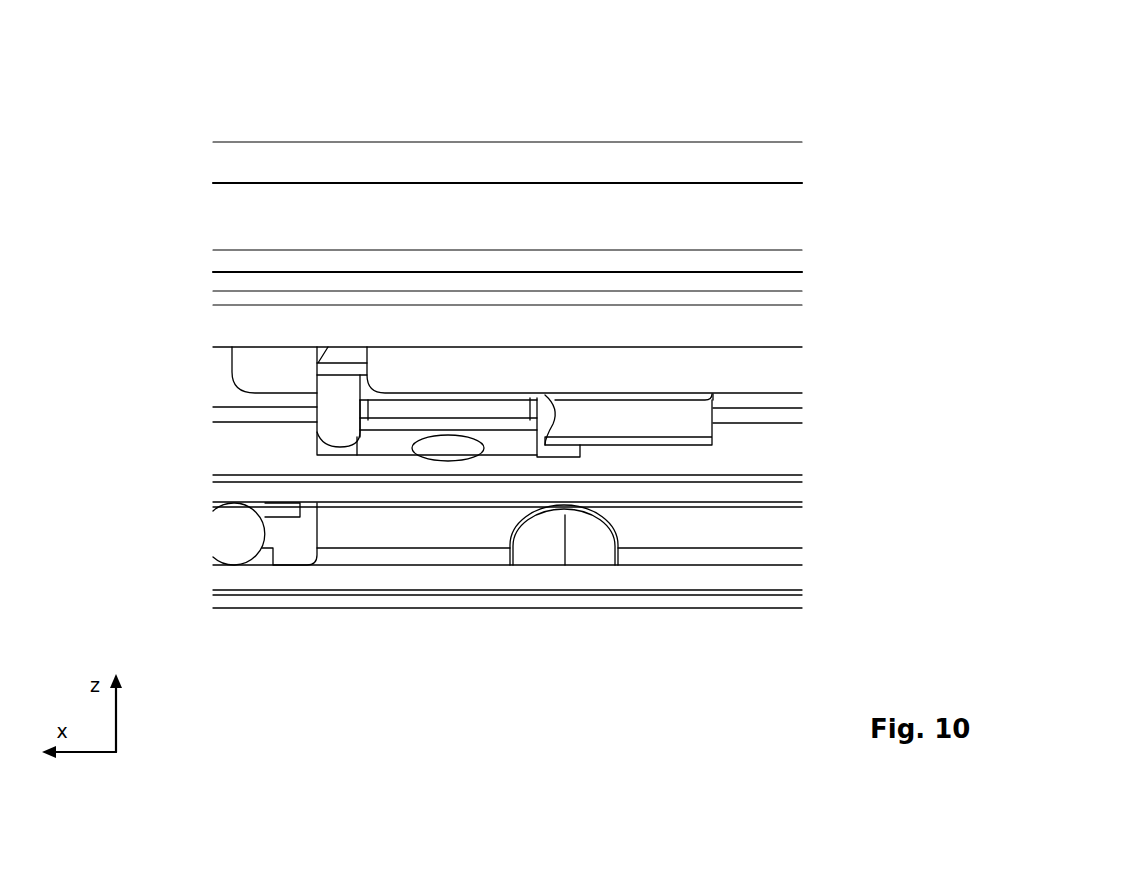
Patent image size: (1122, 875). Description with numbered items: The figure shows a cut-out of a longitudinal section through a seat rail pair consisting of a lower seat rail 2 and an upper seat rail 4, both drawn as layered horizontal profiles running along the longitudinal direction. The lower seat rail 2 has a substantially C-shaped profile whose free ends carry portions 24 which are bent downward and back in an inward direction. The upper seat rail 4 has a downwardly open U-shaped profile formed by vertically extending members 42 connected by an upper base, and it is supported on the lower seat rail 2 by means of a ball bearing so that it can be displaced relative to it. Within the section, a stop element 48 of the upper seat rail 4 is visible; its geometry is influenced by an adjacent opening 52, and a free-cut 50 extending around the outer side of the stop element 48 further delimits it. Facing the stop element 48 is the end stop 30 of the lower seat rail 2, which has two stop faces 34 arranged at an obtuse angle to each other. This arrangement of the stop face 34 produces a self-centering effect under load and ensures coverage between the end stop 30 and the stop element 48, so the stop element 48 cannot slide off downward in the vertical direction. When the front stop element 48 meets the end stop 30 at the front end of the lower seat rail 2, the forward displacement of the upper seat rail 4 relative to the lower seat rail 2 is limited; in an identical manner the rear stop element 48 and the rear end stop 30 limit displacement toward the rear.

The lower seat rail 2 is at (382, 107).
The upper seat rail 4 is at (522, 655).
The portions bent downward 24 is at (605, 333).
The end stop 30 is at (660, 425).
The stop face 34 is at (550, 395).
The member 42 is at (713, 497).
The stop element 48 is at (397, 415).
The free-cut 50 is at (338, 415).
The opening 52 is at (453, 445).